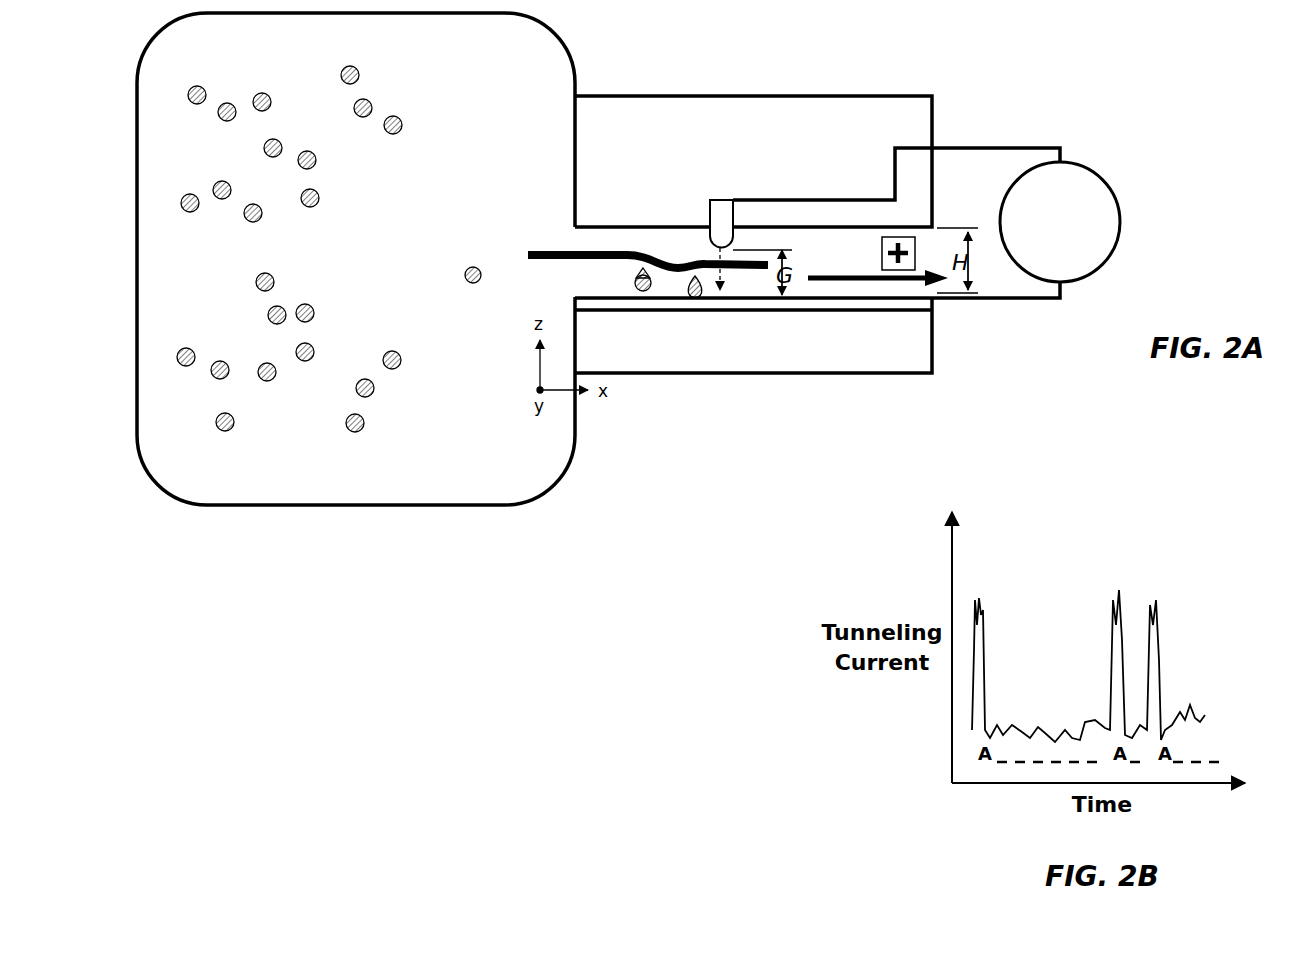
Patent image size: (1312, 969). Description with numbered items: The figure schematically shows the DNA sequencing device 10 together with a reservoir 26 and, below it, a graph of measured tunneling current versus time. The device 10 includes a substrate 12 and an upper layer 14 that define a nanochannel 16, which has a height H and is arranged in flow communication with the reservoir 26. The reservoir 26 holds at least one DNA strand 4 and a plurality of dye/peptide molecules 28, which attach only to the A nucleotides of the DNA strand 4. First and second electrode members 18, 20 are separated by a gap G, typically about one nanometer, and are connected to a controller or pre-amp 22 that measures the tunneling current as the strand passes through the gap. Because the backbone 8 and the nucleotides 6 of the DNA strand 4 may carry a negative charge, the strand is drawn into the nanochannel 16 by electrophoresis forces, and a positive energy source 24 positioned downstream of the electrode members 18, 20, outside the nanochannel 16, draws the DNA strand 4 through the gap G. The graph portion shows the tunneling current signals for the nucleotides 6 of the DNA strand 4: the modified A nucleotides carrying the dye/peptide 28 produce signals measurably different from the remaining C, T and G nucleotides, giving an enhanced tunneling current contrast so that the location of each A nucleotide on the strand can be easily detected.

The DNA sequencing device 10 is at (995, 102).
The DNA strand 4 is at (571, 243).
The nucleotides 6 is at (541, 287).
The backbone 8 is at (537, 250).
The substrate 12 is at (753, 335).
The upper layer 14 is at (753, 161).
The nanochannel 16 is at (637, 243).
The first electrode member 18 is at (718, 208).
The second electrode member 20 is at (848, 303).
The controller or pre-amp 22 is at (926, 215).
The positive energy source 24 is at (905, 237).
The reservoir 26 is at (365, 505).
The dye/peptide molecules 28 is at (317, 162).